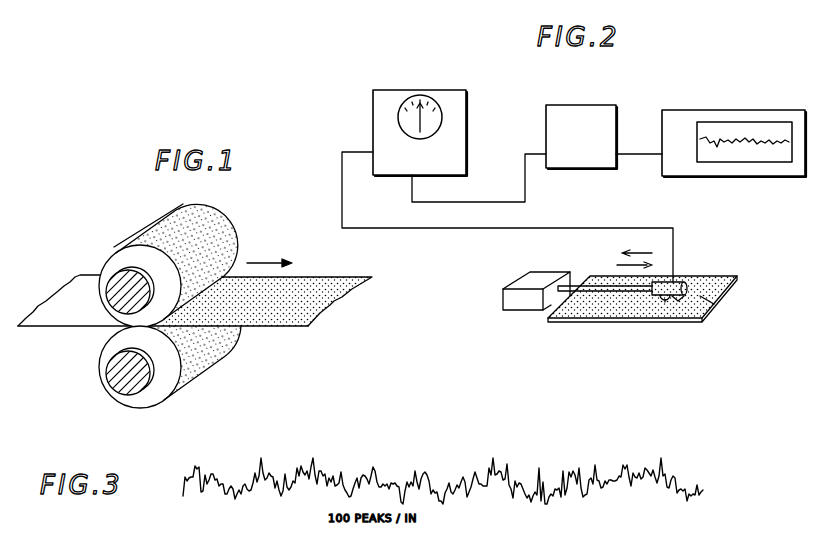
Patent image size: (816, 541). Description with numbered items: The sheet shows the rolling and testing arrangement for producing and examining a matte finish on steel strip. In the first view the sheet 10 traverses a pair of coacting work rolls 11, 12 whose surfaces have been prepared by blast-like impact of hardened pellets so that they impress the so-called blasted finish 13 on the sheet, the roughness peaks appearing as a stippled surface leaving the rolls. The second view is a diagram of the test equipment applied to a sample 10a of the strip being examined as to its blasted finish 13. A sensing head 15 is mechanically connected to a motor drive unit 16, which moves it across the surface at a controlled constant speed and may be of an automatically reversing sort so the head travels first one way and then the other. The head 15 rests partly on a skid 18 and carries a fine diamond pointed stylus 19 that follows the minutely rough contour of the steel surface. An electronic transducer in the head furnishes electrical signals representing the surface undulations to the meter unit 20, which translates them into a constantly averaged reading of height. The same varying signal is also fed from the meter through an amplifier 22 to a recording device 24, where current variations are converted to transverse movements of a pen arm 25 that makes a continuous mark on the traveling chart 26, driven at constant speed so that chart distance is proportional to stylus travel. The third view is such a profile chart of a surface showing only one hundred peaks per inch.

In FIG. 1, the sheet 10 is at (80, 319).
In FIG. 1, the work roll 11 is at (222, 209).
In FIG. 1, the work roll 12 is at (136, 403).
In FIG. 1, the blasted finish 13 is at (313, 285).
In FIG. 2, the blasted finish 13 is at (708, 297).
In FIG. 2, the sample 10a is at (686, 322).
In FIG. 2, the sensing head 15 is at (677, 282).
In FIG. 2, the motor drive unit 16 is at (540, 280).
In FIG. 2, the skid 18 is at (657, 300).
In FIG. 2, the stylus 19 is at (680, 300).
In FIG. 2, the meter unit 20 is at (373, 115).
In FIG. 2, the amplifier 22 is at (546, 125).
In FIG. 2, the recording device 24 is at (697, 168).
In FIG. 2, the pen arm 25 is at (703, 140).
In FIG. 2, the chart 26 is at (778, 158).